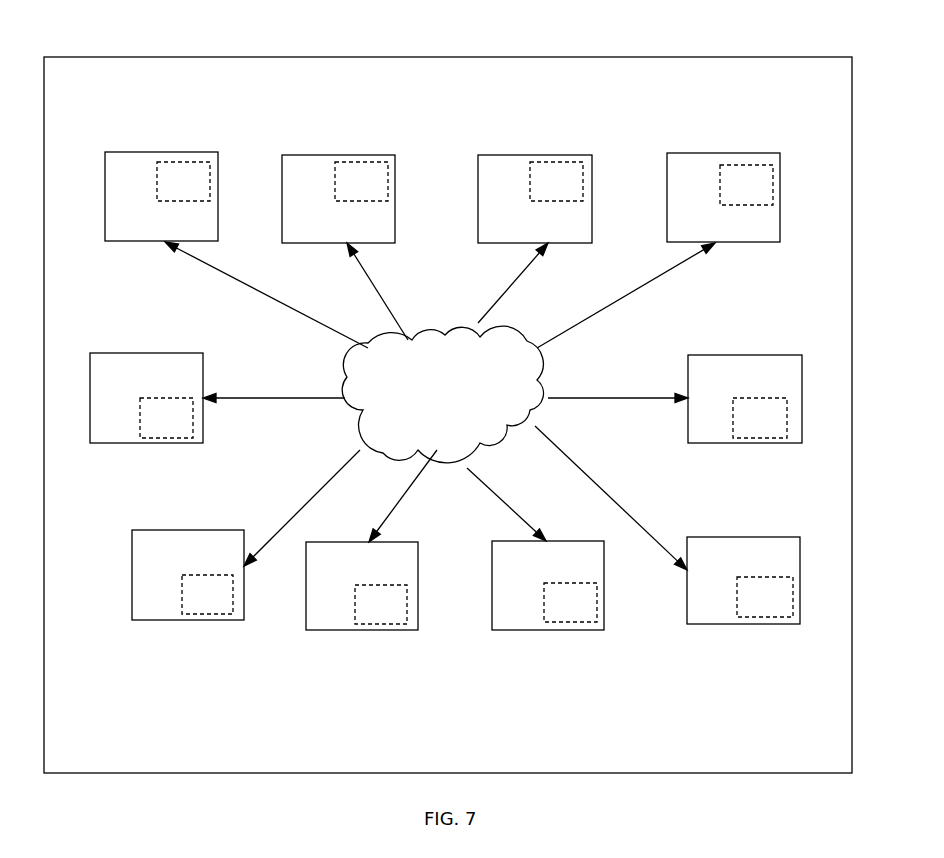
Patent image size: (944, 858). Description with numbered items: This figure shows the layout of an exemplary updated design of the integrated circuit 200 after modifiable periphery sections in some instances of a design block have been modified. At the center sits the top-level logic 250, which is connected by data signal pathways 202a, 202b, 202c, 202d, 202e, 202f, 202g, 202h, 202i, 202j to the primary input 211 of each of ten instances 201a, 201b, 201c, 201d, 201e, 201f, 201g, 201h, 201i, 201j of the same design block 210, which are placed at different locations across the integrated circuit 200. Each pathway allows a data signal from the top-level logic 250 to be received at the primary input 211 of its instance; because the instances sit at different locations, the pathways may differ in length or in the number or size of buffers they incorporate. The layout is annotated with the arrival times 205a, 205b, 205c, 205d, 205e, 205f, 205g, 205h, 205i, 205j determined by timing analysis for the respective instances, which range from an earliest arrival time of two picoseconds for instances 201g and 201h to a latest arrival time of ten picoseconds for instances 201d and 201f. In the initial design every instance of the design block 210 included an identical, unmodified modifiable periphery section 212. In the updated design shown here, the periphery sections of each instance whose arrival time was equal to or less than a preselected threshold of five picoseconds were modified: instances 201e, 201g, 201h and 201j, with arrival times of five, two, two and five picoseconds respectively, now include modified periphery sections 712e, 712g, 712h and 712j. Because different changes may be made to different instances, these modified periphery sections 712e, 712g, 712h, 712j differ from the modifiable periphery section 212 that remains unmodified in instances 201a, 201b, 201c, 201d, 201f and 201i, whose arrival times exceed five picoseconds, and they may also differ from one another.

The integrated circuit 200 is at (448, 57).
The instance of the design block 201a is at (160, 152).
The instance of the design block 201b is at (338, 155).
The instance of the design block 201c is at (535, 155).
The instance of the design block 201d is at (722, 153).
The instance of the design block 201e is at (802, 400).
The instance of the design block 201f is at (742, 624).
The instance of the design block 201g is at (548, 630).
The instance of the design block 201h is at (360, 630).
The instance of the design block 201i is at (190, 620).
The instance of the design block 201j is at (90, 400).
The data signal pathway 202a is at (208, 265).
The data signal pathway 202b is at (362, 268).
The data signal pathway 202c is at (499, 298).
The data signal pathway 202d is at (667, 272).
The data signal pathway 202e is at (628, 400).
The data signal pathway 202f is at (643, 530).
The data signal pathway 202g is at (487, 488).
The data signal pathway 202h is at (400, 502).
The data signal pathway 202i is at (275, 537).
The data signal pathway 202j is at (232, 400).
The arrival time 205a is at (276, 275).
The arrival time 205b is at (400, 290).
The arrival time 205c is at (528, 292).
The arrival time 205d is at (633, 256).
The arrival time 205e is at (610, 372).
The arrival time 205f is at (664, 500).
The arrival time 205g is at (530, 495).
The arrival time 205h is at (370, 495).
The arrival time 205i is at (278, 490).
The arrival time 205j is at (268, 368).
The design block 210 is at (150, 188).
The primary input 211 is at (165, 240).
The modifiable periphery section 212 is at (193, 192).
The top-level logic 250 is at (461, 401).
The modified periphery section 712e is at (778, 425).
The modified periphery section 712g is at (590, 611).
The modified periphery section 712h is at (400, 613).
The modified periphery section 712j is at (183, 425).